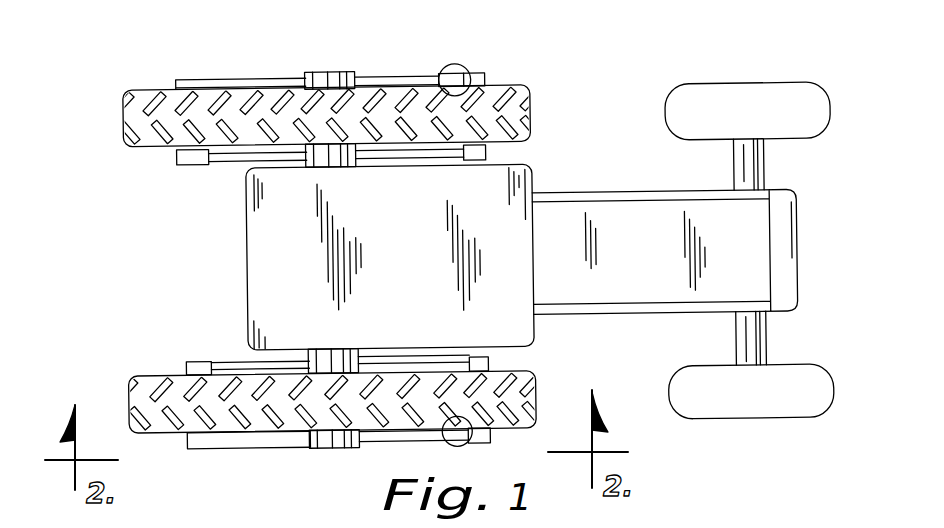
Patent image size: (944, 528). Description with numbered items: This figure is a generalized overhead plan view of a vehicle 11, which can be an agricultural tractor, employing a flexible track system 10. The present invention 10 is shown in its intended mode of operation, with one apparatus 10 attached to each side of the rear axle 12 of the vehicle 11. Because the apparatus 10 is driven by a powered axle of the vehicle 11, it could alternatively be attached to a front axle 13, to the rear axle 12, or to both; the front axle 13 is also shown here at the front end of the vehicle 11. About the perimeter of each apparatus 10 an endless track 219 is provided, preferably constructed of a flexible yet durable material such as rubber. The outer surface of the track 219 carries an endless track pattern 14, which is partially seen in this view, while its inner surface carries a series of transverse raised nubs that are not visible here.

The flexible track system 10 is at (166, 69).
The vehicle 11 is at (212, 272).
The rear axle 12 is at (342, 168).
The front axle 13 is at (765, 158).
The endless track pattern 14 is at (495, 95).
The endless track 219 is at (128, 147).